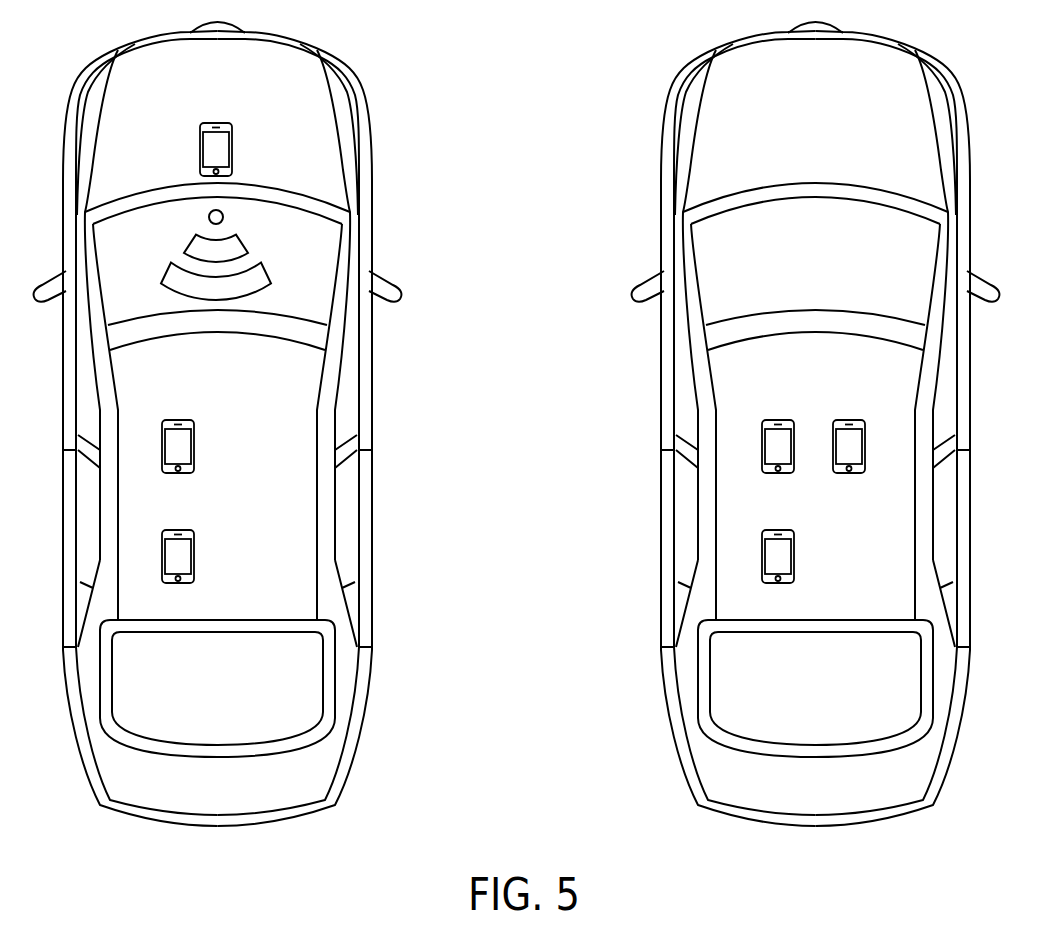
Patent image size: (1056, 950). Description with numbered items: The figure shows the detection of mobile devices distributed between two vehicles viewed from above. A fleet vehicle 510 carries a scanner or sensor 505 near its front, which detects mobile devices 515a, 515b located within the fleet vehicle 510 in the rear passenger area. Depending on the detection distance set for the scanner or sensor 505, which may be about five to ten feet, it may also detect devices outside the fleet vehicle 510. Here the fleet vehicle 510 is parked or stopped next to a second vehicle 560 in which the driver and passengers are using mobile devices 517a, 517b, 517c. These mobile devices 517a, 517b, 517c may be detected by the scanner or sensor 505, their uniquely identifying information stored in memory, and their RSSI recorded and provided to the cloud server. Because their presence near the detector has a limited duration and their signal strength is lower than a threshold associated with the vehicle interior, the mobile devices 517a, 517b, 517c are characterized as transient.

The scanner or sensor 505 is at (233, 150).
The fleet vehicle 510 is at (372, 172).
The mobile device 515a is at (195, 452).
The mobile device 515b is at (195, 557).
The transient mobile device 517a is at (777, 419).
The transient mobile device 517b is at (848, 419).
The transient mobile device 517c is at (795, 557).
The second vehicle 560 is at (970, 172).